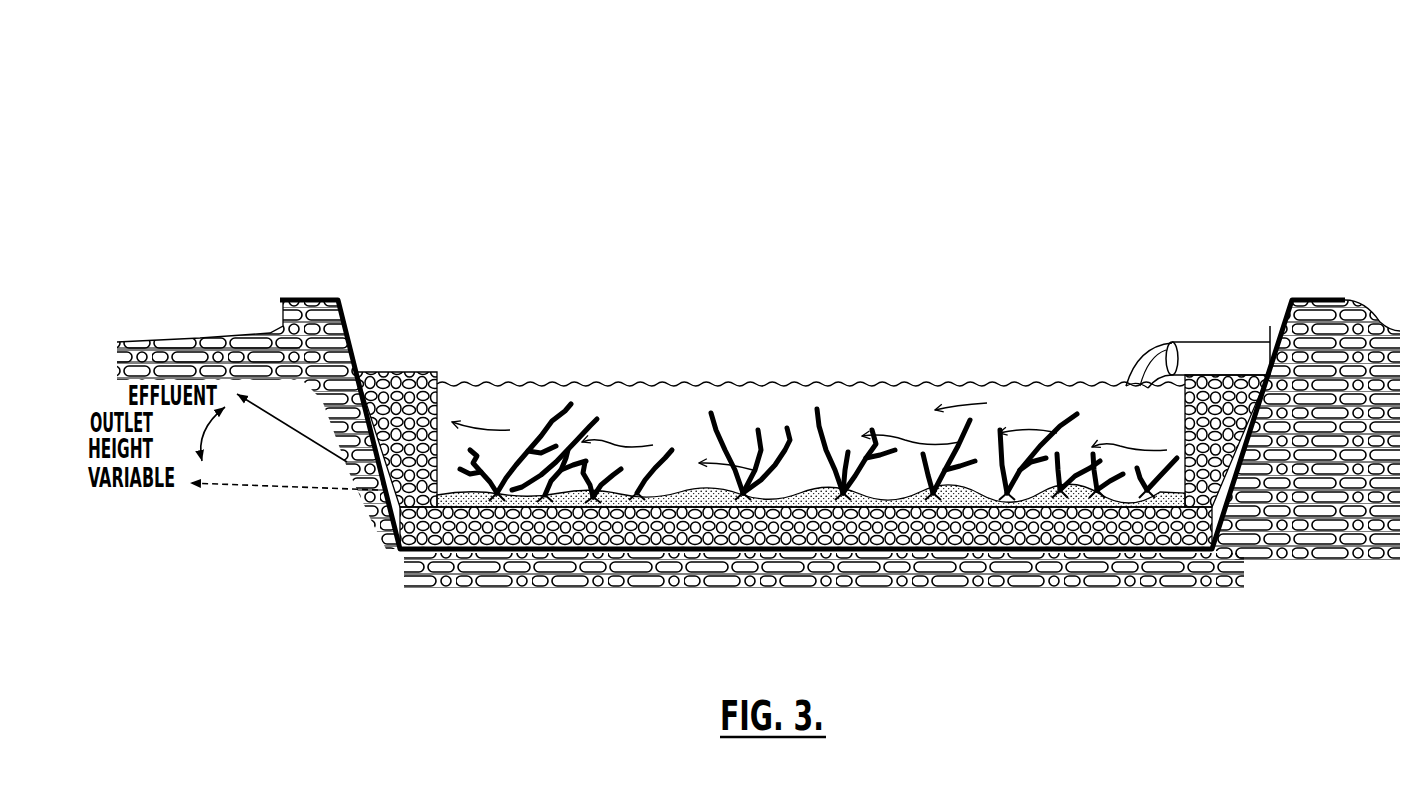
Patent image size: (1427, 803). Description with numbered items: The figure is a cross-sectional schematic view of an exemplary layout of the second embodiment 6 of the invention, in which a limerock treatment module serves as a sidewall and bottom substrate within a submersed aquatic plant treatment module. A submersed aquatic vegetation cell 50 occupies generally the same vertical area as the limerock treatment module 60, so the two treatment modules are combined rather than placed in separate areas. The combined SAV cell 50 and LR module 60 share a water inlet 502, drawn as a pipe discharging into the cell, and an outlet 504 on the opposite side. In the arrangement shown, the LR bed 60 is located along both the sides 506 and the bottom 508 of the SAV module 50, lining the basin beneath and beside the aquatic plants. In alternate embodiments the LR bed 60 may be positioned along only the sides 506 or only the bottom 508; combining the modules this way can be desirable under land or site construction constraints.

The second embodiment 6 is at (353, 103).
The submersed aquatic vegetation cell 50 is at (780, 351).
The water inlet 502 is at (1160, 341).
The outlet 504 is at (393, 533).
The sides 506 is at (437, 412).
The limerock treatment module 60 is at (585, 548).
The bottom 508 is at (995, 495).